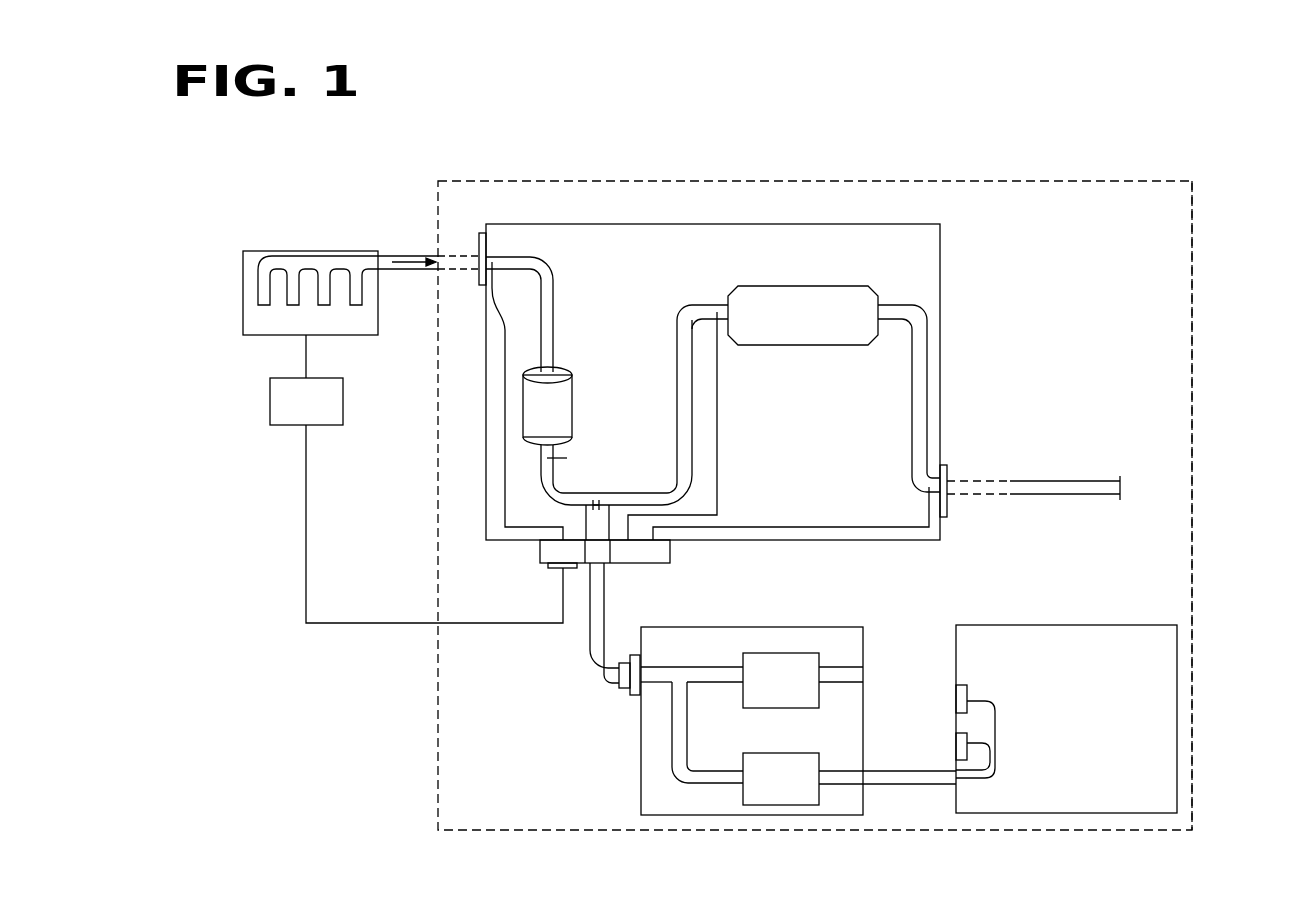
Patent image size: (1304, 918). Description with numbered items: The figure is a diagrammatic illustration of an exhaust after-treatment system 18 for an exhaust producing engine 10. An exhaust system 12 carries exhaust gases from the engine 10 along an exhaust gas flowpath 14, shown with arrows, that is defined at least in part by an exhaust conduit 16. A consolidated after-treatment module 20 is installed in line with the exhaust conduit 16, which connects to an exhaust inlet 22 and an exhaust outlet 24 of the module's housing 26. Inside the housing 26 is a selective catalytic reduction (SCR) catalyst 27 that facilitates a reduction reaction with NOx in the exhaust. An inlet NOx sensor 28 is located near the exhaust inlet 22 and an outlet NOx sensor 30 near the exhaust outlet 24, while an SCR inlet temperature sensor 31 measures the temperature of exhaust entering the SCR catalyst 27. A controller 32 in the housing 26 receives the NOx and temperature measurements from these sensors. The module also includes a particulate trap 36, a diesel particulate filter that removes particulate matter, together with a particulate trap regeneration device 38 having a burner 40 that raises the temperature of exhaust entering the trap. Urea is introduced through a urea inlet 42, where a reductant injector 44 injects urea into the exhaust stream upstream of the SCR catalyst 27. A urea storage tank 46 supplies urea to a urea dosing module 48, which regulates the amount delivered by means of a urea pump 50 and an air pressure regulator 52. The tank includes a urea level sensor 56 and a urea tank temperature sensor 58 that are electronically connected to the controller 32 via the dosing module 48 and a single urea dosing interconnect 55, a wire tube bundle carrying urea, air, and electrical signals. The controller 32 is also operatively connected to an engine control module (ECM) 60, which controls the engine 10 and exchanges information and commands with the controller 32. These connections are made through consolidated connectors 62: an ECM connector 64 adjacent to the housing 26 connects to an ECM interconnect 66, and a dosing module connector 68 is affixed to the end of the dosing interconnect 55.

The engine 10 is at (265, 250).
The exhaust system 12 is at (1087, 162).
The exhaust gas flowpath 14 is at (410, 256).
The exhaust conduit 16 is at (388, 253).
The exhaust after-treatment system 18 is at (1192, 338).
The consolidated after-treatment module 20 is at (978, 312).
The exhaust inlet 22 is at (478, 250).
The exhaust outlet 24 is at (960, 512).
The housing 26 is at (940, 255).
The selective catalytic reduction (SCR) catalyst 27 is at (790, 285).
The inlet NOx sensor 28 is at (498, 277).
The outlet NOx sensor 30 is at (925, 495).
The SCR inlet temperature sensor 31 is at (720, 335).
The controller 32 is at (672, 553).
The particulate trap 36 is at (578, 383).
The particulate trap regeneration device 38 is at (577, 447).
The burner 40 is at (568, 459).
The urea inlet 42 is at (620, 567).
The reductant injector 44 is at (583, 513).
The urea storage tank 46 is at (1070, 625).
The urea dosing module 48 is at (745, 625).
The urea pump 50 is at (800, 753).
The air pressure regulator 52 is at (780, 652).
The urea dosing interconnect 55 is at (590, 655).
The urea level sensor 56 is at (955, 700).
The urea tank temperature sensor 58 is at (955, 745).
The engine control module (ECM) 60 is at (270, 398).
The consolidated connectors 62 is at (542, 570).
The ECM connector 64 is at (552, 569).
The ECM interconnect 66 is at (365, 623).
The dosing module connector 68 is at (618, 688).